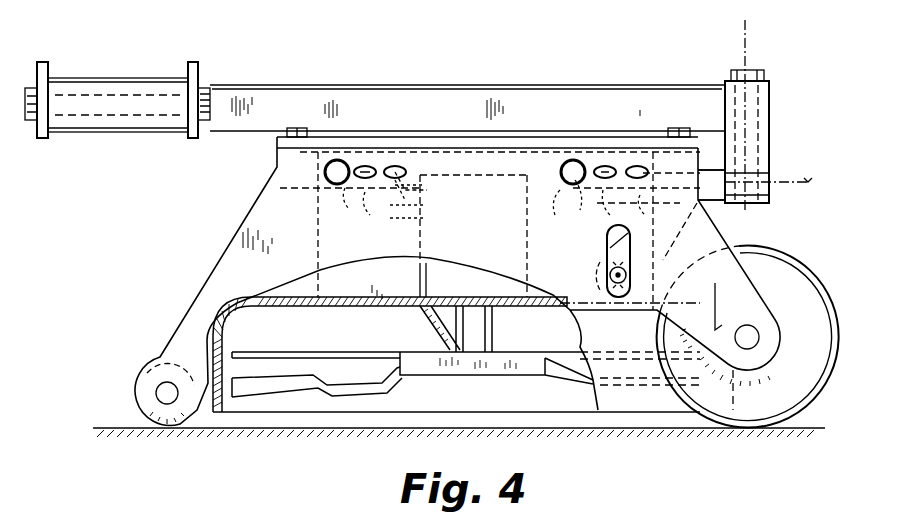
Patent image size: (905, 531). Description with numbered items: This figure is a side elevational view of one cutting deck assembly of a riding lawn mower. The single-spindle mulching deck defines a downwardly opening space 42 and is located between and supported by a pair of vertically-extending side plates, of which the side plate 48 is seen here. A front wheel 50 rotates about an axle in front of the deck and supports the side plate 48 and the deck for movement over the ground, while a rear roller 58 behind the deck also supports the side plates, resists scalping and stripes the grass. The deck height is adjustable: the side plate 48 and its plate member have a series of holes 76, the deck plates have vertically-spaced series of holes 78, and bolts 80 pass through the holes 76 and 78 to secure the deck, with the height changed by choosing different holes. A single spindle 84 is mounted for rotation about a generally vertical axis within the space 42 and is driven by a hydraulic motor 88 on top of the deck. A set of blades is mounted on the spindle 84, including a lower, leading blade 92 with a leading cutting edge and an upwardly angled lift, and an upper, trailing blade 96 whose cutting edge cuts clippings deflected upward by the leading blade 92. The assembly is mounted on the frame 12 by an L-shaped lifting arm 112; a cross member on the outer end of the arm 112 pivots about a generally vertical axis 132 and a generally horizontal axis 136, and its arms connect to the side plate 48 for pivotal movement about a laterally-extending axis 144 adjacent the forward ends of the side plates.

The frame 12 is at (47, 67).
The lifting arm 112 is at (492, 67).
The vertical axis 132 is at (745, 40).
The horizontal axis 136 is at (795, 180).
The side plate 48 is at (270, 213).
The front wheel 50 is at (793, 263).
The rear roller 58 is at (148, 371).
The bolts 80 is at (323, 166).
The holes 76 is at (395, 166).
The holes 78 is at (494, 213).
The horizontal laterally-extending axis 144 is at (609, 272).
The hydraulic motor 88 is at (417, 273).
The downwardly opening space 42 is at (415, 344).
The spindle 84 is at (477, 340).
The trailing blade 96 is at (310, 352).
The leading blade 92 is at (292, 392).